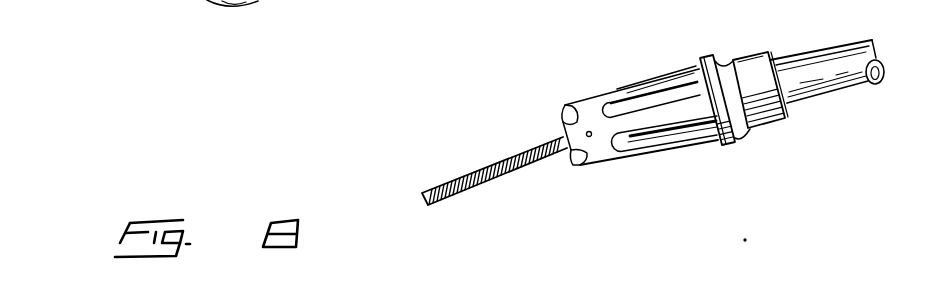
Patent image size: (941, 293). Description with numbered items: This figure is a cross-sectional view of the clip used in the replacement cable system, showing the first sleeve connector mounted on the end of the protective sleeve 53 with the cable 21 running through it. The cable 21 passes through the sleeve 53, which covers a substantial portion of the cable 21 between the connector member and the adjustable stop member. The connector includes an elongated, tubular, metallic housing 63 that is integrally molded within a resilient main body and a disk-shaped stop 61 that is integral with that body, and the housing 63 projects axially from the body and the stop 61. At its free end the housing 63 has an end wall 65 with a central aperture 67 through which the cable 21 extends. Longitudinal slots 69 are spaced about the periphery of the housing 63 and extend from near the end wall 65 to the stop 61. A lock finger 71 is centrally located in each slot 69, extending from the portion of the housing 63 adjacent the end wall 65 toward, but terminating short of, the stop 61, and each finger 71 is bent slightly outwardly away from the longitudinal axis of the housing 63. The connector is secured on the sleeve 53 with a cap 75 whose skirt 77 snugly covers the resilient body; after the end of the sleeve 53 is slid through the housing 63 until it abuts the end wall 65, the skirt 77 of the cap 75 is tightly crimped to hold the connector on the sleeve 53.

The cable 21 is at (486, 181).
The protective sleeve 53 is at (853, 90).
The disk-shaped stop 61 is at (730, 146).
The housing 63 is at (600, 96).
The end wall 65 is at (560, 125).
The central aperture 67 is at (565, 151).
The longitudinal slots 69 is at (620, 105).
The lock finger 71 is at (680, 76).
The cap 75 is at (782, 126).
The skirt 77 is at (753, 76).